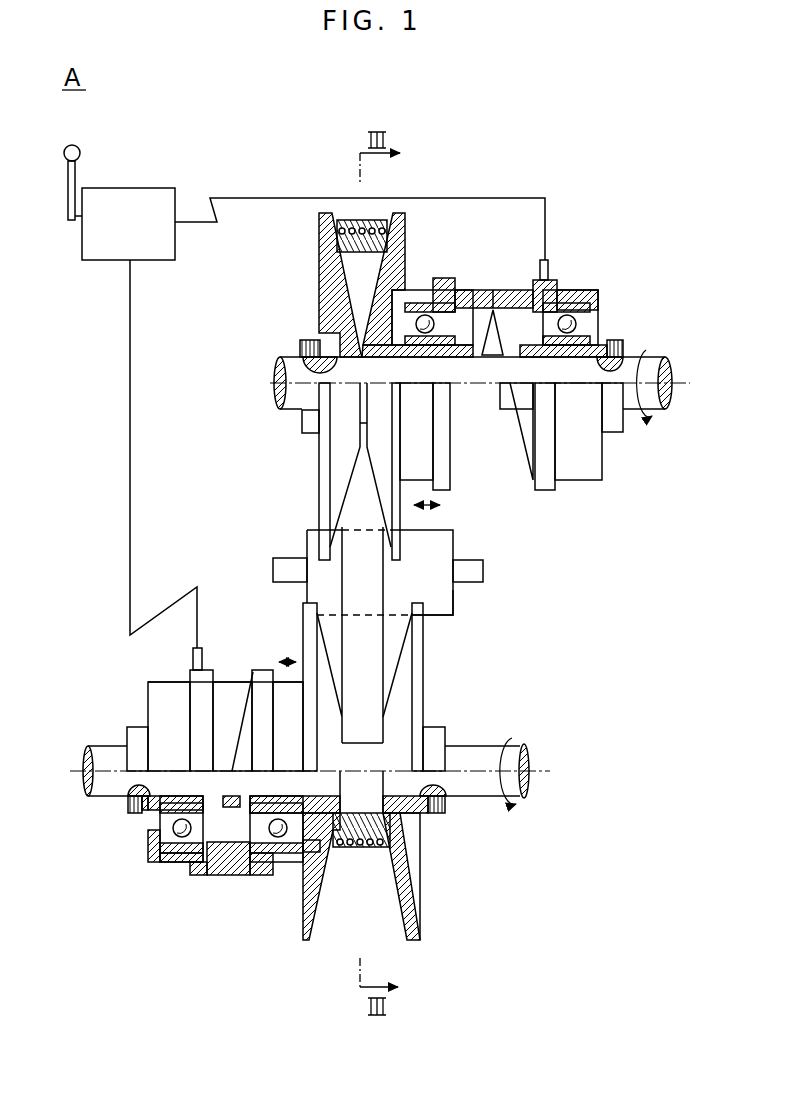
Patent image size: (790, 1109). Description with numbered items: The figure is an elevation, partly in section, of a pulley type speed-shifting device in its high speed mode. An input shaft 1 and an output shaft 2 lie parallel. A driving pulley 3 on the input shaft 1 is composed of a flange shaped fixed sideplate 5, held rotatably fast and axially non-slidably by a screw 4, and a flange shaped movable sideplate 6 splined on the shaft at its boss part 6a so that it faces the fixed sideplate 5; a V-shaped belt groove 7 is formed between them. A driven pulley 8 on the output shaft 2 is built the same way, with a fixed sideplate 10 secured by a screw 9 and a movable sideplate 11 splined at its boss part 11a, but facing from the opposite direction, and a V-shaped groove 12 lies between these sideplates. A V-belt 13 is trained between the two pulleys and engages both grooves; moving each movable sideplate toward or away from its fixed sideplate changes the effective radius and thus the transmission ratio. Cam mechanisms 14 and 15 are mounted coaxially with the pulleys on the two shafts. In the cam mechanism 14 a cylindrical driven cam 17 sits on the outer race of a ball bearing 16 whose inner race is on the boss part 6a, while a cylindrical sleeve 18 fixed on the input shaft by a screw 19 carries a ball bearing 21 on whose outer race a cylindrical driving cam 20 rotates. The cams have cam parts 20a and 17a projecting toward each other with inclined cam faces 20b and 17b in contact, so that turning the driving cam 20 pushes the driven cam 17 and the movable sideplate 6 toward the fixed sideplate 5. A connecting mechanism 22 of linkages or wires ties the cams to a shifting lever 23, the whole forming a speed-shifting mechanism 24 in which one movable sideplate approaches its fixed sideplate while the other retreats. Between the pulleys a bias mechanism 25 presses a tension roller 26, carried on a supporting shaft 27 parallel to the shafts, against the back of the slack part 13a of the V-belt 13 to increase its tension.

The input shaft 1 is at (657, 417).
The output shaft 2 is at (523, 793).
The driving pulley 3 is at (314, 226).
The screw 4 is at (316, 342).
The fixed sideplate 5 is at (318, 256).
The movable sideplate 6 is at (411, 222).
The boss part 6a is at (405, 353).
The V-shaped belt groove 7 is at (373, 265).
The driven pulley 8 is at (425, 911).
The screw 9 is at (437, 813).
The fixed sideplate 10 is at (422, 882).
The movable sideplate 11 is at (298, 927).
The boss part 11a is at (270, 800).
The V-shaped groove 12 is at (398, 893).
The V-belt 13 is at (396, 638).
The slack part 13a is at (394, 667).
The cam mechanism 14 is at (553, 510).
The cam mechanism 15 is at (124, 895).
The ball bearing 16 is at (413, 290).
The driven cam 17 is at (455, 278).
The cam part 17a is at (487, 290).
The inclined cam face 17b is at (238, 723).
The cylindrical sleeve 18 is at (600, 343).
The screw 19 is at (622, 343).
The driving cam 20 is at (574, 287).
The cam part 20a is at (525, 290).
The inclined cam face 20b is at (458, 450).
The ball bearing 21 is at (556, 282).
The connecting mechanism 22 is at (158, 187).
The shifting lever 23 is at (80, 170).
The speed-shifting mechanism 24 is at (112, 390).
The bias mechanism 25 is at (458, 605).
The tension roller 26 is at (454, 537).
The supporting shaft 27 is at (484, 570).